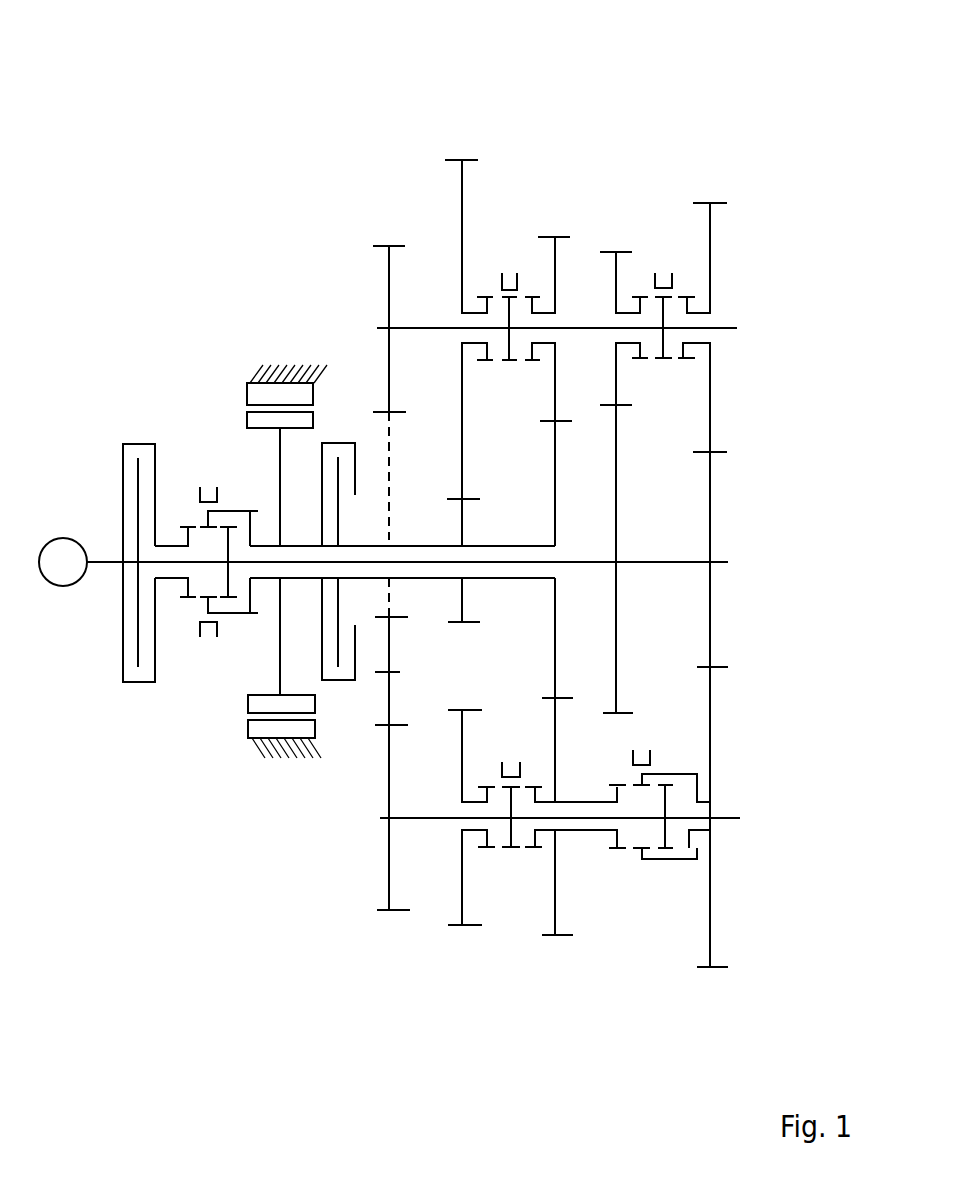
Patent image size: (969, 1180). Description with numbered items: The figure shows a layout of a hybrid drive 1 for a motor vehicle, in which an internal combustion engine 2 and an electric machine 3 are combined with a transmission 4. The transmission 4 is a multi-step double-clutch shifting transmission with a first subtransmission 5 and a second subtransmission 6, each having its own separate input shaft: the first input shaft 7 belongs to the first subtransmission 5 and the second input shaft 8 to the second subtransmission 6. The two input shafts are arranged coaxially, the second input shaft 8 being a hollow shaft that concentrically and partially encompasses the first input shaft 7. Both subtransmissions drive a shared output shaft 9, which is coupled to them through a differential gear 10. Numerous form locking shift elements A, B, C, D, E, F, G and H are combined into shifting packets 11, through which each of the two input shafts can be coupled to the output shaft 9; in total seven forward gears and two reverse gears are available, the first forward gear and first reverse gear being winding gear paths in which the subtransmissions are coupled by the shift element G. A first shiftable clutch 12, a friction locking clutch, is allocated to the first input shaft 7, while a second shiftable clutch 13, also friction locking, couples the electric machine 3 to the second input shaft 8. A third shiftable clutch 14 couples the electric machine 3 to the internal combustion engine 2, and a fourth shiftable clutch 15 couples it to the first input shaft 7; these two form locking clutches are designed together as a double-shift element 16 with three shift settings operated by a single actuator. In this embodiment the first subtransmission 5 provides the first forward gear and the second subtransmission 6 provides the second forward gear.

The hybrid drive 1 is at (762, 166).
The internal combustion engine 2 is at (73, 538).
The electric machine 3 is at (292, 354).
The transmission 4 is at (373, 1033).
The first subtransmission 5 is at (730, 101).
The second subtransmission 6 is at (443, 101).
The first input shaft 7 is at (407, 829).
The second input shaft 8 is at (402, 306).
The output shaft 9 is at (338, 884).
The differential gear 10 is at (379, 671).
The shifting packet 11 is at (507, 262).
The first shiftable clutch 12 is at (137, 708).
The second shiftable clutch 13 is at (337, 428).
The third shiftable clutch 14 is at (185, 482).
The fourth shiftable clutch 15 is at (228, 482).
The double-shift element 16 is at (157, 100).